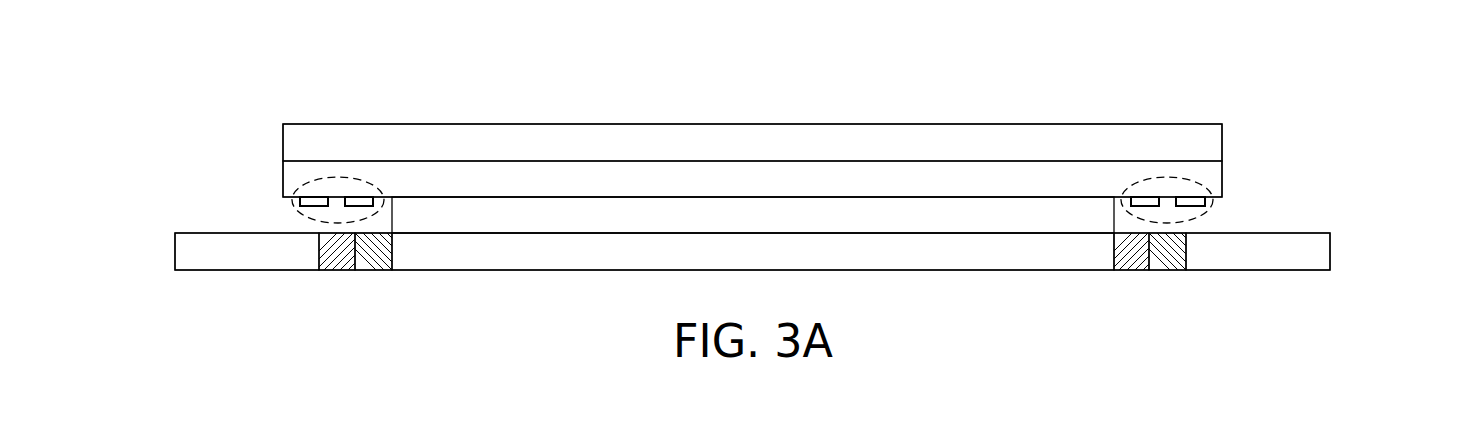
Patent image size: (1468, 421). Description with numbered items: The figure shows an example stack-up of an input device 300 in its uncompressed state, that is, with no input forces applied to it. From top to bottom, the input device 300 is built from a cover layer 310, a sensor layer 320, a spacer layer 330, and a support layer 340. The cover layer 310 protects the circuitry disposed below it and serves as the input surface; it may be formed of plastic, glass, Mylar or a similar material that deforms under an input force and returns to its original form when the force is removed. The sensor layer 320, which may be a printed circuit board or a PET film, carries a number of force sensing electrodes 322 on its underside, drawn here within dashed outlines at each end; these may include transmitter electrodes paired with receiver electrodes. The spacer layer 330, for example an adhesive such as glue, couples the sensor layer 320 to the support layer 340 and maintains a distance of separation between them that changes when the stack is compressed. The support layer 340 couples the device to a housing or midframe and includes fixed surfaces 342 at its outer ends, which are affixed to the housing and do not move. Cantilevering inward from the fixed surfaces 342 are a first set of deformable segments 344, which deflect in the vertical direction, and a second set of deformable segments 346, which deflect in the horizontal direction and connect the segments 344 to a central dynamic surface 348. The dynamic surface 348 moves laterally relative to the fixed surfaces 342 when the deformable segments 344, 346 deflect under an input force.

The input device 300 is at (192, 108).
The cover layer 310 is at (772, 153).
The sensor layer 320 is at (772, 190).
The force sensing electrodes 322 is at (296, 202).
The spacer layer 330 is at (772, 226).
The support layer 340 is at (1350, 252).
The fixed surfaces 342 is at (267, 262).
The first set of deformable segments 344 is at (338, 271).
The second set of deformable segments 346 is at (374, 271).
The dynamic surface 348 is at (772, 262).